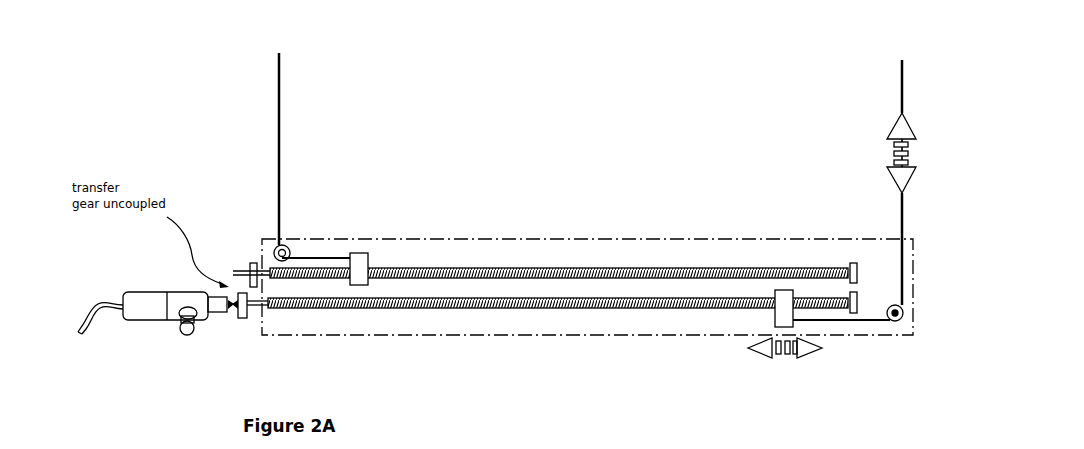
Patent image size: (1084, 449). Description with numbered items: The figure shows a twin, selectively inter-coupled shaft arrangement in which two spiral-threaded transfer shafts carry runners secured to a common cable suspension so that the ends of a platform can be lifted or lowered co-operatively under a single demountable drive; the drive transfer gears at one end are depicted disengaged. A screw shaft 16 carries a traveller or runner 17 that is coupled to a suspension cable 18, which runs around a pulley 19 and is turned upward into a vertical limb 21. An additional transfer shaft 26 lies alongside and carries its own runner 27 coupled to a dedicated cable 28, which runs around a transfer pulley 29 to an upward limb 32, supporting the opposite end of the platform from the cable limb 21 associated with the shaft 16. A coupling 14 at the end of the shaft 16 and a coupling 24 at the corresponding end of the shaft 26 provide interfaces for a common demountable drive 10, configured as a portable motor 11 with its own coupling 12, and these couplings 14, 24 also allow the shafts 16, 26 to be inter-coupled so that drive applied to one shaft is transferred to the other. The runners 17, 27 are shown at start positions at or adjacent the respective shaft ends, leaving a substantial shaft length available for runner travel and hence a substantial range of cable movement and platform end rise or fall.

The demountable drive 10 is at (193, 343).
The portable motor 11 is at (150, 307).
The coupling 12 is at (217, 307).
The coupling 14 is at (242, 313).
The screw shaft 16 is at (432, 305).
The runner 17 is at (781, 309).
The suspension cable 18 is at (843, 320).
The pulley 19 is at (893, 321).
The vertical limb 21 is at (902, 277).
The coupling 24 is at (253, 270).
The additional transfer shaft 26 is at (585, 272).
The runner 27 is at (360, 268).
The dedicated cable 28 is at (315, 258).
The transfer pulley 29 is at (286, 246).
The upward limb 32 is at (279, 111).